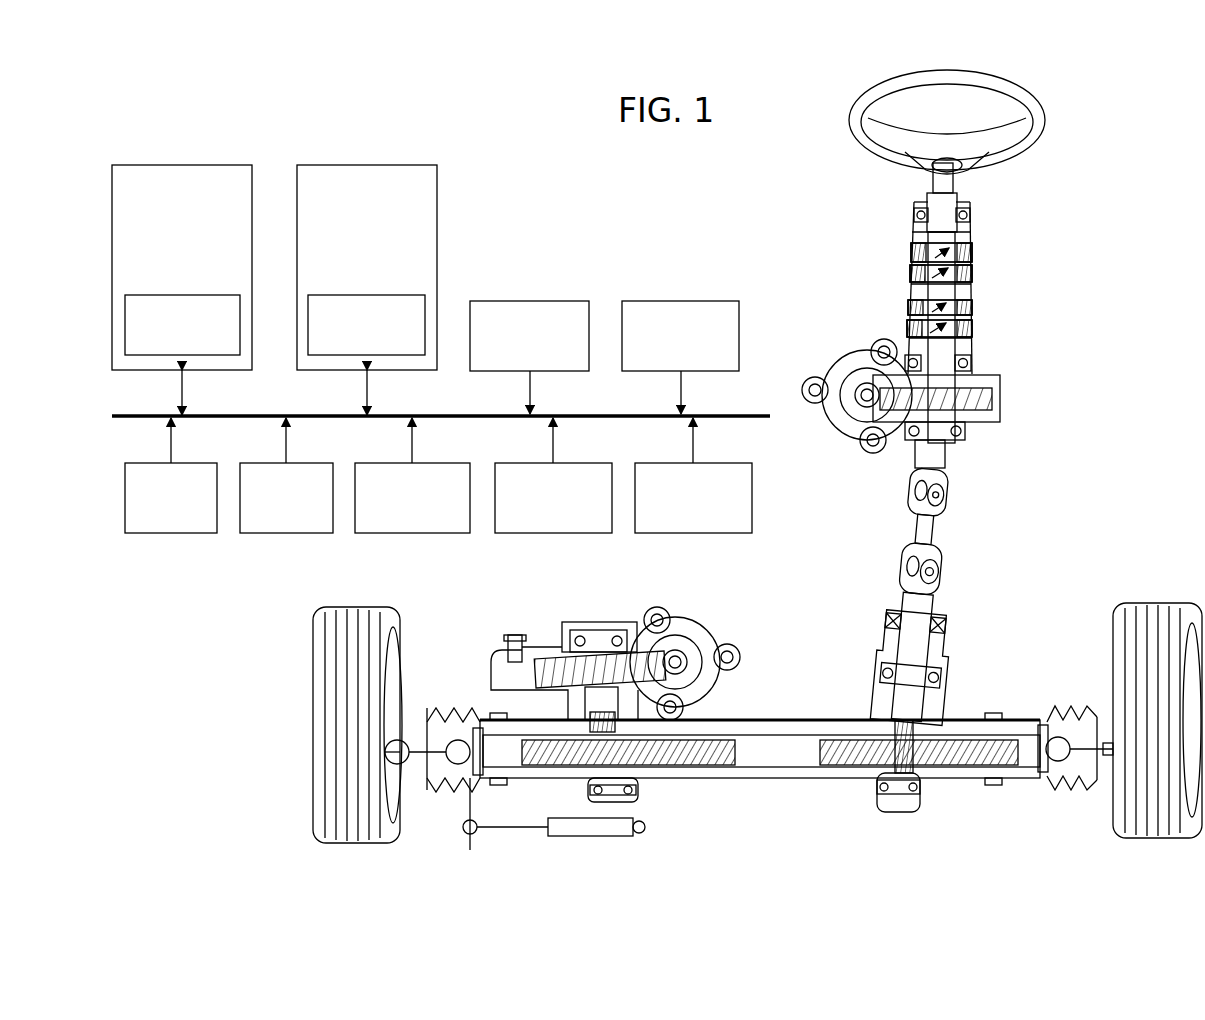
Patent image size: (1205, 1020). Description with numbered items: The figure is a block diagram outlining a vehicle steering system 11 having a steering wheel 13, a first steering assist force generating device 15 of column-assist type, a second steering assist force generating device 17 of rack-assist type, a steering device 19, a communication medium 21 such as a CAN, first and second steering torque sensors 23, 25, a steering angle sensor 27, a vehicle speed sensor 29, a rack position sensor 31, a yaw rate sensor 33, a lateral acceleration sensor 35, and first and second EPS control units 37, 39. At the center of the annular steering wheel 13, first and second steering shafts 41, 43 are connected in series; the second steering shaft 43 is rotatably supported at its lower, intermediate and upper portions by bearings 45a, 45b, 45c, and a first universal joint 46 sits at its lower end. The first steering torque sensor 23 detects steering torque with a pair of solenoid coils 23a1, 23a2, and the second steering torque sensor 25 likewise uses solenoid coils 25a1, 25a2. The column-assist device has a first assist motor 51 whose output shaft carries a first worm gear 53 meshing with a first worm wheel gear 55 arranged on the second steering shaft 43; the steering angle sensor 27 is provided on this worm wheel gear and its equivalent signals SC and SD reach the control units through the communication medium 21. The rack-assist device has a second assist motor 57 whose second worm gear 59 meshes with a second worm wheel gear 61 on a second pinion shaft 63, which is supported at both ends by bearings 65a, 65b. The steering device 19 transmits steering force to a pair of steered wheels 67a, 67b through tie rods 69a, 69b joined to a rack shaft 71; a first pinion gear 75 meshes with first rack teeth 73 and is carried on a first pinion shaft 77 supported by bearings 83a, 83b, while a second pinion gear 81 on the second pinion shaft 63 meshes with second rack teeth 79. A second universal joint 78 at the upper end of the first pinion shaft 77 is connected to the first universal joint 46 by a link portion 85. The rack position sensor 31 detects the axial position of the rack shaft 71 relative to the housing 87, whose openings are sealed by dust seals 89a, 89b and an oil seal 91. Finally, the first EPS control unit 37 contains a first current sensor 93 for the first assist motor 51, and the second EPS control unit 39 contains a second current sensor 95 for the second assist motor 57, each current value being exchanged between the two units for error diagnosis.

The vehicle steering system 11 is at (1150, 128).
The steering wheel 13 is at (1040, 125).
The first steering assist force generating device 15 is at (834, 447).
The second steering assist force generating device 17 is at (718, 614).
The steering device 19 is at (797, 794).
The communication medium 21 is at (720, 414).
The first steering torque sensor 23 is at (710, 463).
The solenoid coil 23a1 is at (911, 251).
The solenoid coil 23a2 is at (910, 273).
The second steering torque sensor 25 is at (570, 463).
The solenoid coil 25a1 is at (908, 306).
The solenoid coil 25a2 is at (907, 328).
The steering angle sensor 27 is at (422, 463).
The vehicle speed sensor 29 is at (700, 301).
The rack position sensor 31 is at (548, 301).
The yaw rate sensor 33 is at (305, 463).
The lateral acceleration sensor 35 is at (190, 463).
The first EPS control unit 37 is at (393, 166).
The second EPS control unit 39 is at (208, 166).
The first steering shaft 41 is at (954, 178).
The second steering shaft 43 is at (944, 290).
The bearing 45a is at (968, 430).
The bearing 45b is at (972, 361).
The bearing 45c is at (968, 212).
The first universal joint 46 is at (945, 478).
The first assist motor 51 is at (858, 432).
The first worm gear 53 is at (828, 374).
The first worm wheel gear 55 is at (992, 398).
The second assist motor 57 is at (716, 680).
The second worm gear 59 is at (660, 607).
The second worm wheel gear 61 is at (555, 674).
The second pinion shaft 63 is at (570, 700).
The bearing 65a is at (590, 792).
The bearing 65b is at (580, 634).
The steered wheel 67a is at (1152, 617).
The steered wheel 67b is at (354, 622).
The tie rod 69a is at (1088, 758).
The tie rod 69b is at (426, 790).
The rack shaft 71 is at (781, 761).
The first rack teeth 73 is at (965, 766).
The first pinion gear 75 is at (888, 770).
The first pinion shaft 77 is at (922, 606).
The second universal joint 78 is at (942, 574).
The second rack teeth 79 is at (690, 766).
The second pinion gear 81 is at (640, 793).
The bearing 83a is at (922, 795).
The bearing 83b is at (950, 670).
The link portion 85 is at (932, 527).
The housing 87 is at (822, 780).
The dust seal 89a is at (1044, 788).
The dust seal 89b is at (447, 790).
The oil seal 91 is at (946, 622).
The first current sensor 93 is at (388, 295).
The second current sensor 95 is at (204, 295).